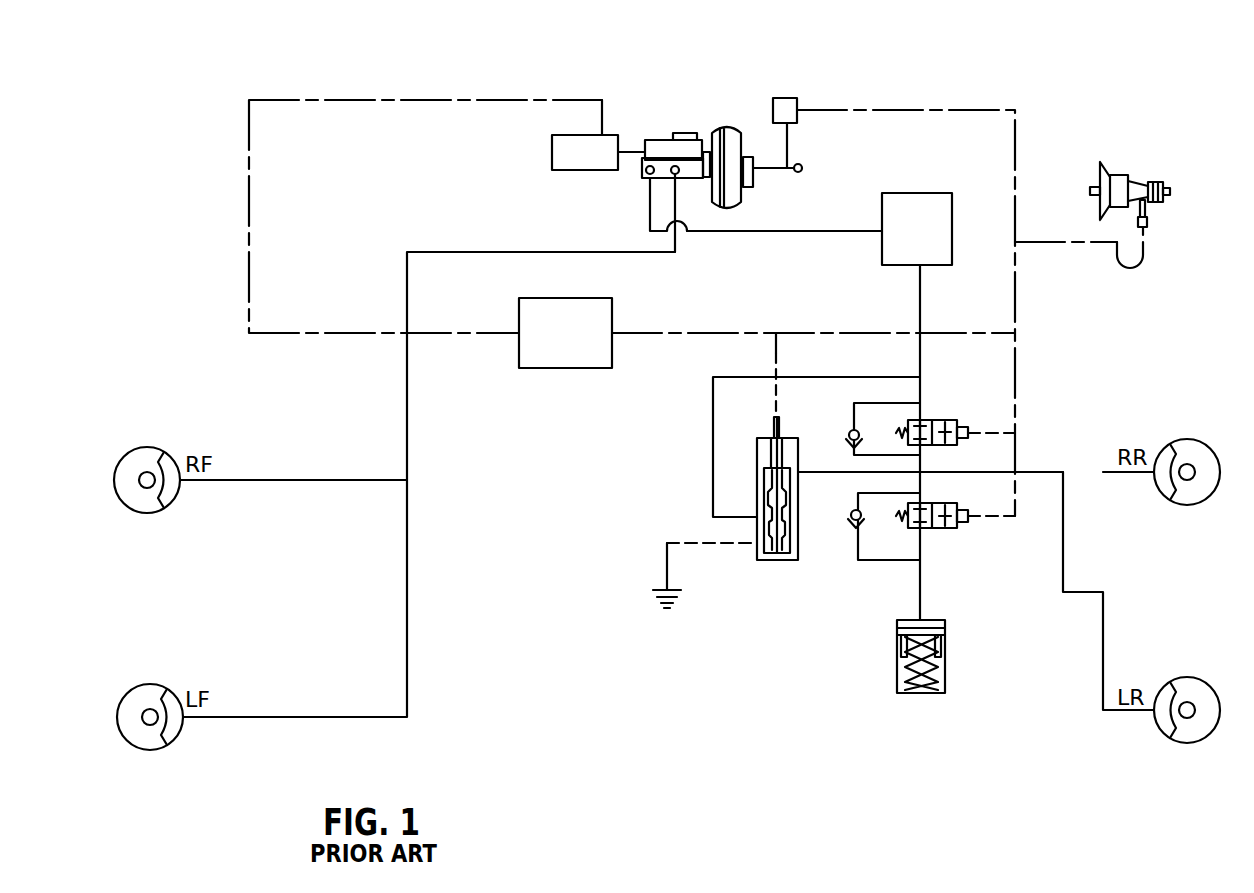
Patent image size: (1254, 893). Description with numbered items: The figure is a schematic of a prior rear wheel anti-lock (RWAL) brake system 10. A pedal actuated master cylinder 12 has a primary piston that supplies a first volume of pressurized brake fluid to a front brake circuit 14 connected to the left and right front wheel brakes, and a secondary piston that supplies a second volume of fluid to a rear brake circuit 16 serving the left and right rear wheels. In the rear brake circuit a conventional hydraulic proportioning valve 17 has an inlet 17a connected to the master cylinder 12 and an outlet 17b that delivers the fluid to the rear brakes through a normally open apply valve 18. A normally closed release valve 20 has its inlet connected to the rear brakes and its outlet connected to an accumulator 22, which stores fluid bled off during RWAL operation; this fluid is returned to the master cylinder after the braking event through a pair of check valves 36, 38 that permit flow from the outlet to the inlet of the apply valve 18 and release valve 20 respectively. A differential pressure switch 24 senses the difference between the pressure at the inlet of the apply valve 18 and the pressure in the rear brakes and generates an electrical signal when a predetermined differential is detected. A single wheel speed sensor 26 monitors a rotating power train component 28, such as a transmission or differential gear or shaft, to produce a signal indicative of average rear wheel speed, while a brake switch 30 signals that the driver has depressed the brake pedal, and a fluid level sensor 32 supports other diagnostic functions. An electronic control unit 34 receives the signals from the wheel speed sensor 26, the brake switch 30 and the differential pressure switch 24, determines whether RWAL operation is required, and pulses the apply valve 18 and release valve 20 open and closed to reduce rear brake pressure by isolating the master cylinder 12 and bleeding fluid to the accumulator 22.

The RWAL brake system 10 is at (950, 68).
The master cylinder 12 is at (647, 175).
The front brake circuit 14 is at (407, 440).
The rear brake circuit 16 is at (836, 240).
The hydraulic proportioning valve 17 is at (927, 193).
The inlet 17a is at (880, 228).
The outlet 17b is at (917, 268).
The apply valve 18 is at (942, 420).
The release valve 20 is at (950, 528).
The accumulator 22 is at (948, 672).
The differential pressure switch 24 is at (797, 552).
The wheel speed sensor 26 is at (1148, 222).
The component 28 is at (1118, 176).
The brake switch 30 is at (787, 98).
The fluid level sensor 32 is at (612, 135).
The electronic control unit 34 is at (589, 368).
The check valve 36 is at (849, 430).
The check valve 38 is at (852, 523).